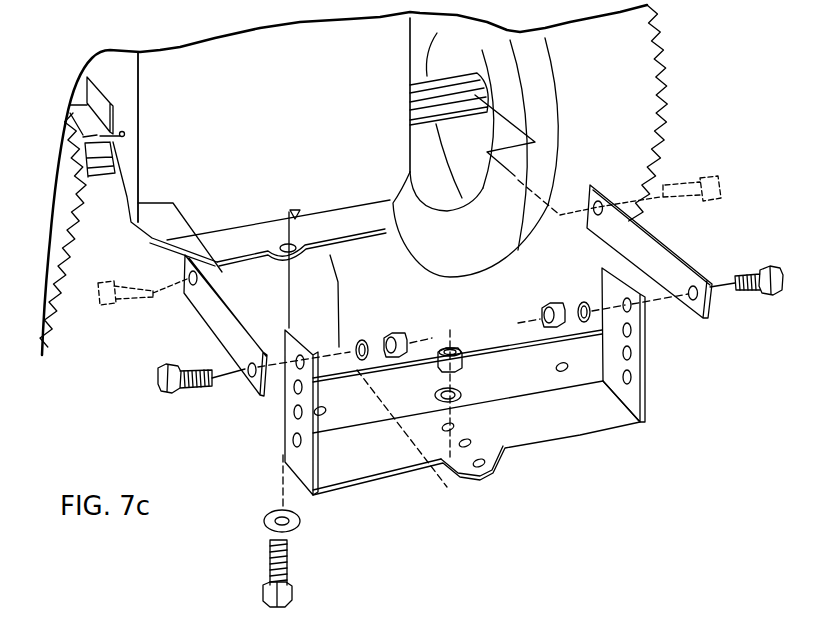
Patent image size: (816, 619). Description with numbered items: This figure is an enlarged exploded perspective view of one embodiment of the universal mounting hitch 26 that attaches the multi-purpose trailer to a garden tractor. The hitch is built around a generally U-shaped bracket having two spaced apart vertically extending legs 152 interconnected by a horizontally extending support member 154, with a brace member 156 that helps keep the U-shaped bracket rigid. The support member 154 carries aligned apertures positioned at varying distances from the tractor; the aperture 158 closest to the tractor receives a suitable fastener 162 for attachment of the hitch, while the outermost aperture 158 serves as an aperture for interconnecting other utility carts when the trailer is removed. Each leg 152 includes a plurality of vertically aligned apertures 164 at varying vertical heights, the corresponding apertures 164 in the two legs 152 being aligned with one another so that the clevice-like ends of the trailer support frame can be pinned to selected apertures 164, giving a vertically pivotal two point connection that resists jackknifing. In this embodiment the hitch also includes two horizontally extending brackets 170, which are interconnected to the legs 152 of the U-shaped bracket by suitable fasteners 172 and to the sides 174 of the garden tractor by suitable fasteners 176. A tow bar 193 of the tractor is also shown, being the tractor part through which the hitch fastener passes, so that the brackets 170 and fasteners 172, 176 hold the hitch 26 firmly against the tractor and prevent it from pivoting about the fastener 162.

The sides of the garden tractor 174 is at (118, 68).
The fasteners 176 is at (120, 308).
The horizontally extending brackets 170 is at (220, 323).
The fasteners 172 is at (192, 392).
The tow bar 193 is at (253, 246).
The universal mounting hitch 26 is at (230, 497).
The vertically extending legs 152 is at (647, 347).
The vertically aligned apertures 164 is at (293, 415).
The brace member 156 is at (520, 383).
The horizontally extending support member 154 is at (590, 413).
The aperture 158 is at (487, 463).
The fastener 162 is at (288, 571).